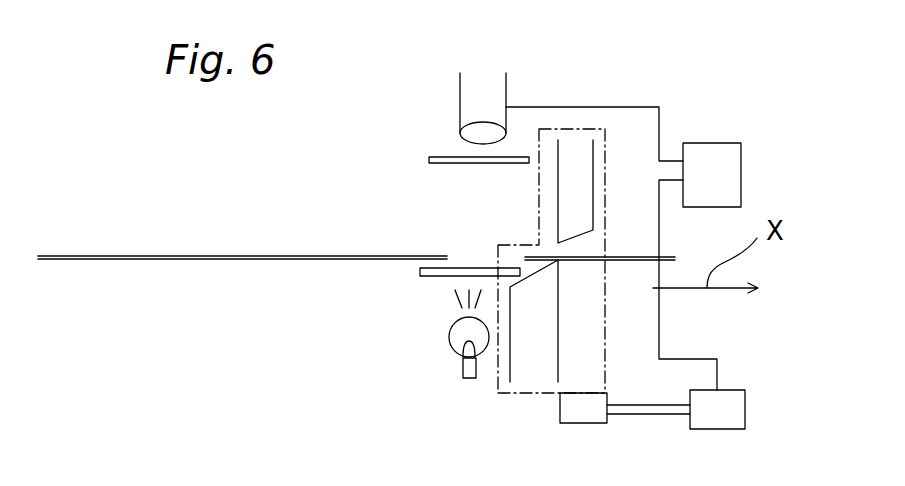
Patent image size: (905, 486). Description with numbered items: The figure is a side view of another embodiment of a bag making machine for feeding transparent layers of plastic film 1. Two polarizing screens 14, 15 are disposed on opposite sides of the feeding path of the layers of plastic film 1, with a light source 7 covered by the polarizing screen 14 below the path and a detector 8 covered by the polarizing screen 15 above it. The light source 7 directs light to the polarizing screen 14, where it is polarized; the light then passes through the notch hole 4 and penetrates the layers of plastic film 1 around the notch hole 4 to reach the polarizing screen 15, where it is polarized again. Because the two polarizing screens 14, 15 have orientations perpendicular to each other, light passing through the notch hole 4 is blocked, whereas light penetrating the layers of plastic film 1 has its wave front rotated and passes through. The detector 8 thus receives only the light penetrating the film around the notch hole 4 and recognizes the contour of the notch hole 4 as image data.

The layers of plastic film 1 is at (248, 255).
The notch hole 4 is at (480, 258).
The light source 7 is at (453, 340).
The detector 8 is at (460, 100).
The polarizing screen 14 is at (420, 272).
The polarizing screen 15 is at (429, 160).